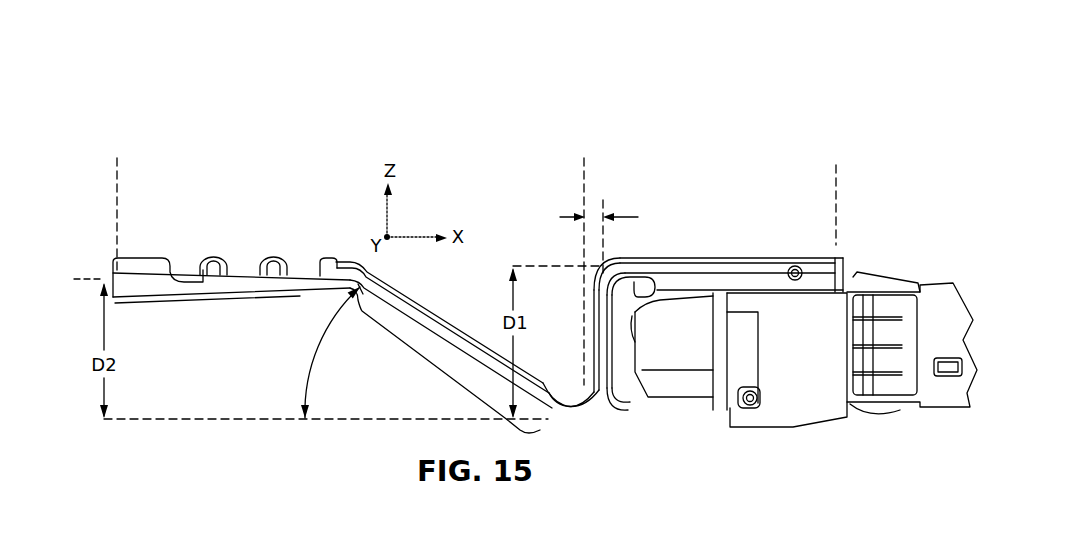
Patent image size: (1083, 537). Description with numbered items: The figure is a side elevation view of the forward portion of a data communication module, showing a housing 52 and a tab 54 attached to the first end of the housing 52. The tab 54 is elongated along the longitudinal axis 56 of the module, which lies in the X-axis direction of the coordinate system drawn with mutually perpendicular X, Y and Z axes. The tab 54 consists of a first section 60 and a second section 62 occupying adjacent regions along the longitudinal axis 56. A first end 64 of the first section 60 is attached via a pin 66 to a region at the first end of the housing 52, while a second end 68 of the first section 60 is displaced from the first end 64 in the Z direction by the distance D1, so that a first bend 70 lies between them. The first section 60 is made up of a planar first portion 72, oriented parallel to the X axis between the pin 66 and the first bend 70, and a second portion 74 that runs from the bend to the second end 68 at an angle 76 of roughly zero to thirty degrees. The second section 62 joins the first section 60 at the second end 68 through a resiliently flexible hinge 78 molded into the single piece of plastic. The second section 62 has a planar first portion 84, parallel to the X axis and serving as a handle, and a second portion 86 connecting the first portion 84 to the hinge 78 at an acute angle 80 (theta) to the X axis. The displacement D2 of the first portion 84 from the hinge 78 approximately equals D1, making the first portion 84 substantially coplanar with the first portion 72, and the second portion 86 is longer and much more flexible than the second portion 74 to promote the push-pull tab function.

The housing 52 is at (799, 335).
The tab 54 is at (450, 86).
The longitudinal axis 56 is at (97, 279).
The first section 60 is at (840, 153).
The second section 62 is at (117, 153).
The first end 64 is at (813, 258).
The pin 66 is at (822, 272).
The second end 68 is at (622, 395).
The first bend 70 is at (614, 258).
The first portion 72 is at (613, 248).
The second portion 74 is at (575, 278).
The angle 76 is at (600, 208).
The resiliently flexible hinge 78 is at (577, 421).
The acute angle 80 is at (313, 361).
The first portion 84 is at (333, 312).
The second portion 86 is at (436, 380).